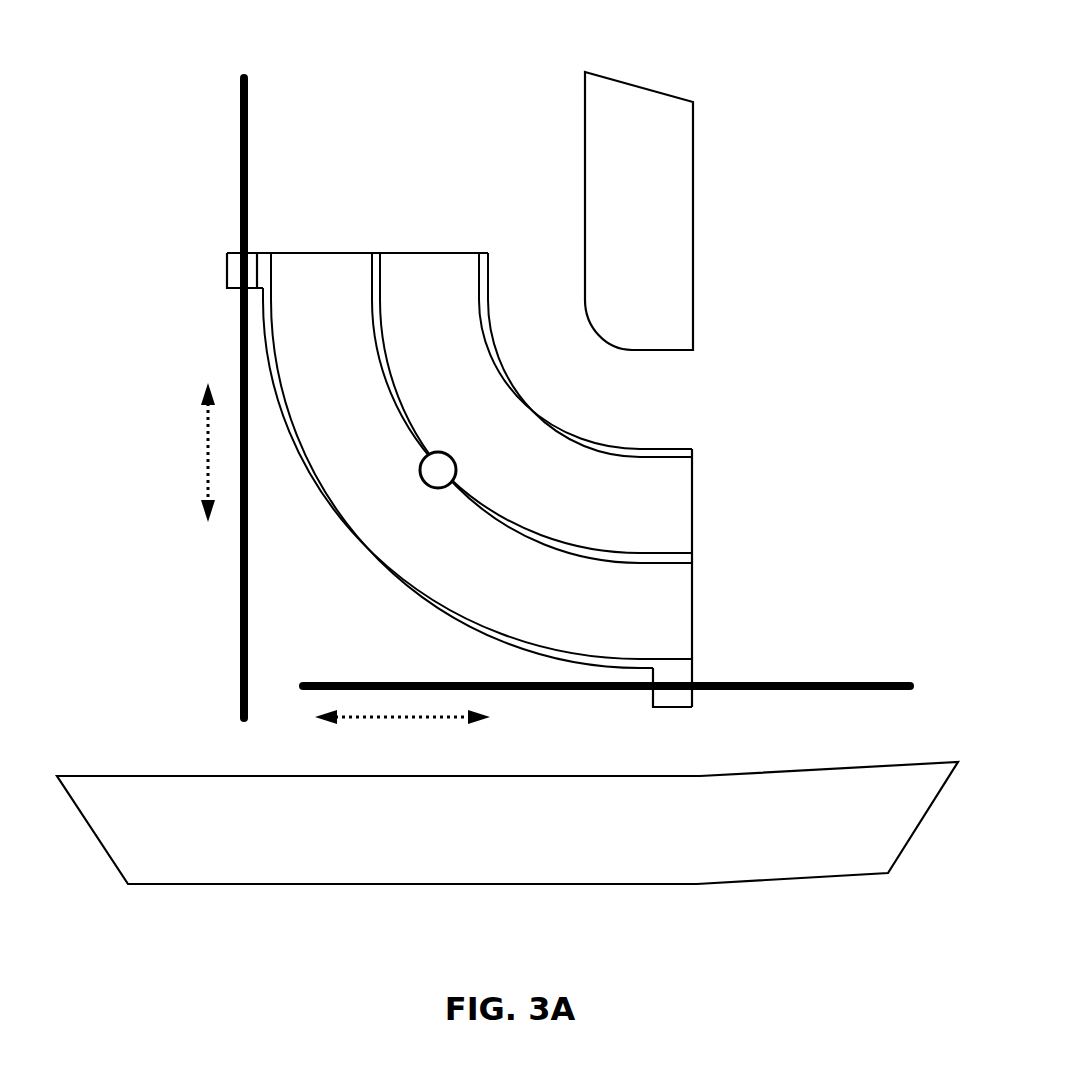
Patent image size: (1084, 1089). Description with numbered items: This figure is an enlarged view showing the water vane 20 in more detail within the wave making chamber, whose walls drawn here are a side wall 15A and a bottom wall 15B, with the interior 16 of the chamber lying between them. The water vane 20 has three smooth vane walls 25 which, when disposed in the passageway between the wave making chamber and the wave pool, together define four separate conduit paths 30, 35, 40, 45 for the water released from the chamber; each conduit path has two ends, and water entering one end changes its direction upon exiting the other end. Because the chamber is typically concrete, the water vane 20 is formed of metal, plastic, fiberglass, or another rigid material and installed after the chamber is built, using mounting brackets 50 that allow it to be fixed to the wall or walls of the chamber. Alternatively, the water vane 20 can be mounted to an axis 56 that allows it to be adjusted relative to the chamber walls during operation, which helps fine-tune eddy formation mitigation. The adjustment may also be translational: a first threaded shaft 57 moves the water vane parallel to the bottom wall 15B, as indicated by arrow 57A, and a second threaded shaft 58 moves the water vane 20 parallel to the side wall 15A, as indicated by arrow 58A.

The side wall 15A is at (670, 142).
The bottom wall 15B is at (243, 840).
The interior 16 is at (173, 575).
The water vane 20 is at (240, 227).
The vane walls 25 is at (262, 256).
The conduit path 30 is at (668, 735).
The conduit path 35 is at (652, 612).
The conduit path 40 is at (652, 505).
The conduit path 45 is at (670, 417).
The mounting brackets 50 is at (227, 257).
The axis 56 is at (422, 483).
The first threaded shaft 57 is at (907, 690).
The arrow 57A is at (418, 720).
The second threaded shaft 58 is at (240, 315).
The arrow 58A is at (207, 437).